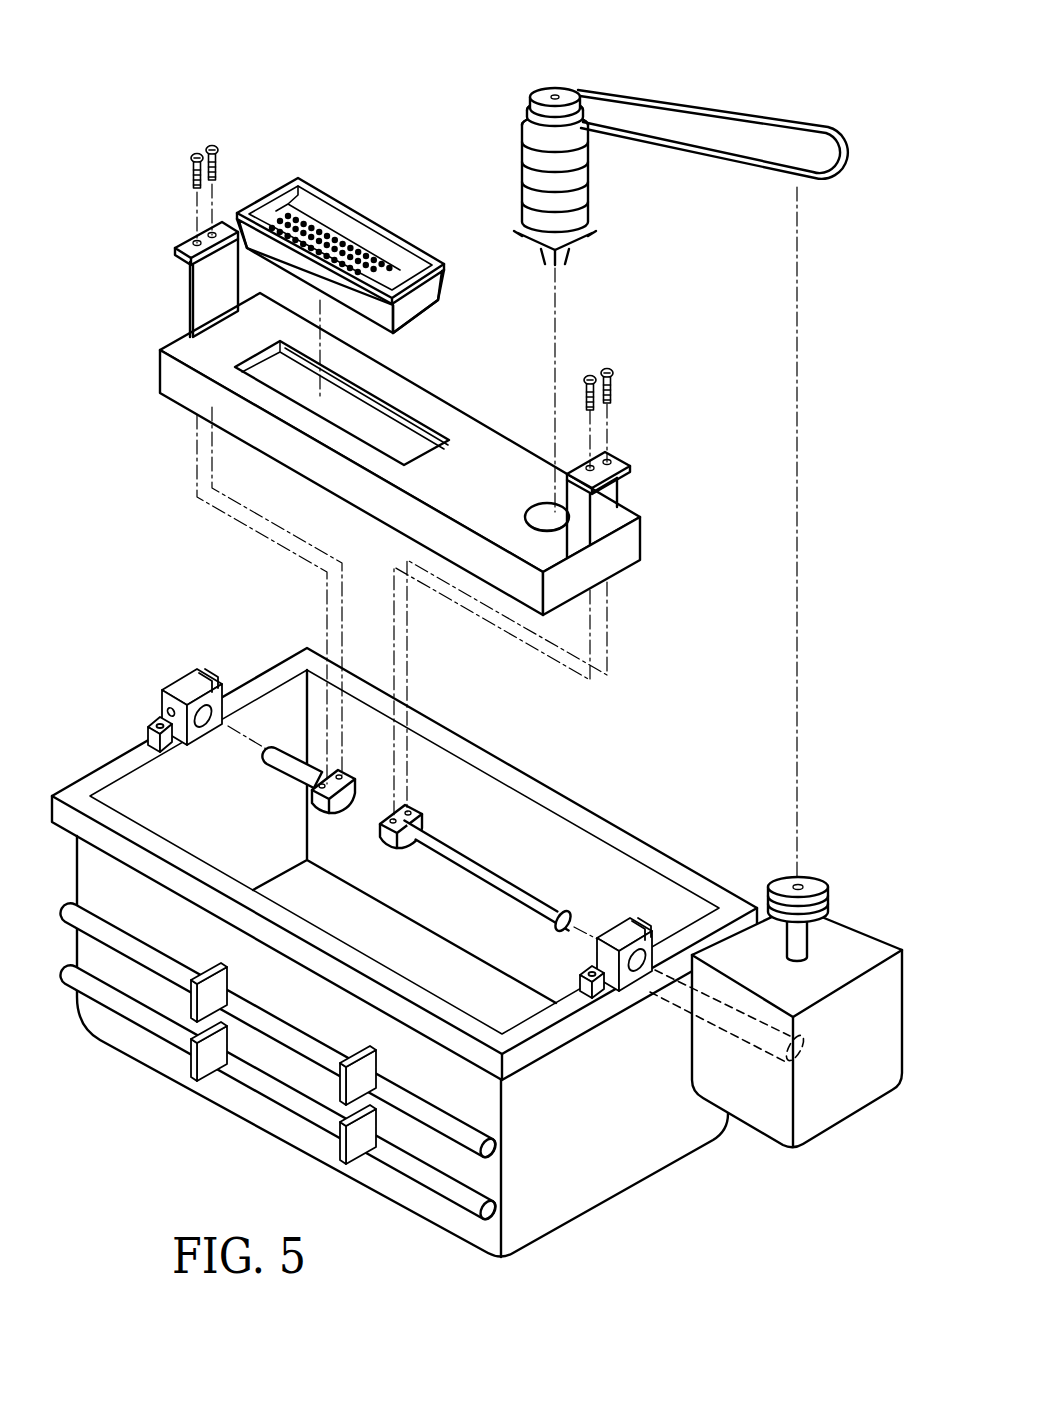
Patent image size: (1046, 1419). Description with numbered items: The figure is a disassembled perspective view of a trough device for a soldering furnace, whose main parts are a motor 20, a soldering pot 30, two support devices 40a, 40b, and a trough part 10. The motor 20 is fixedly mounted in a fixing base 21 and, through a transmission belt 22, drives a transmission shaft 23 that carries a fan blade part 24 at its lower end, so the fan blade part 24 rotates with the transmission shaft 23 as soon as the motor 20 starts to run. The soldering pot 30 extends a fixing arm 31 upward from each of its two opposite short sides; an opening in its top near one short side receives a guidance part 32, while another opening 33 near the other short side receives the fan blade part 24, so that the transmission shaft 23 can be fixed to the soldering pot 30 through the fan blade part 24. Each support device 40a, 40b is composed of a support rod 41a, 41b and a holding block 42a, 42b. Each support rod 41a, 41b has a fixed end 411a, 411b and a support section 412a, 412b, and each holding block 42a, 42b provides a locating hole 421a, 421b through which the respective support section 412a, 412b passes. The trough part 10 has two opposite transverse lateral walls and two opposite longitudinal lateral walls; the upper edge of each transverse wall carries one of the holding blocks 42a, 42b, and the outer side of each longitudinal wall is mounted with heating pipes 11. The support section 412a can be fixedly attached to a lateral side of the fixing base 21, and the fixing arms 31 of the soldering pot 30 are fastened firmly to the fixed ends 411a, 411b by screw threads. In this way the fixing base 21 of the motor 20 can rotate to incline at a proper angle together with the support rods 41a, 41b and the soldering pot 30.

The trough part 10 is at (608, 1180).
The heating pipes 11 is at (133, 1012).
The motor 20 is at (820, 880).
The fixing base 21 is at (853, 1103).
The transmission belt 22 is at (752, 108).
The transmission shaft 23 is at (540, 93).
The fan blade part 24 is at (582, 214).
The soldering pot 30 is at (178, 213).
The fixing arm 31 is at (172, 249).
The guidance part 32 is at (338, 215).
The opening 33 is at (540, 507).
The support device 40a is at (580, 842).
The support device 40b is at (214, 718).
The support rod 41a is at (509, 823).
The support rod 41b is at (222, 751).
The fixed end 411a is at (488, 820).
The fixed end 411b is at (275, 770).
The support section 412a is at (460, 853).
The support section 412b is at (300, 765).
The holding block 42a is at (680, 889).
The holding block 42b is at (177, 672).
The locating hole 421a is at (660, 968).
The locating hole 421b is at (187, 682).